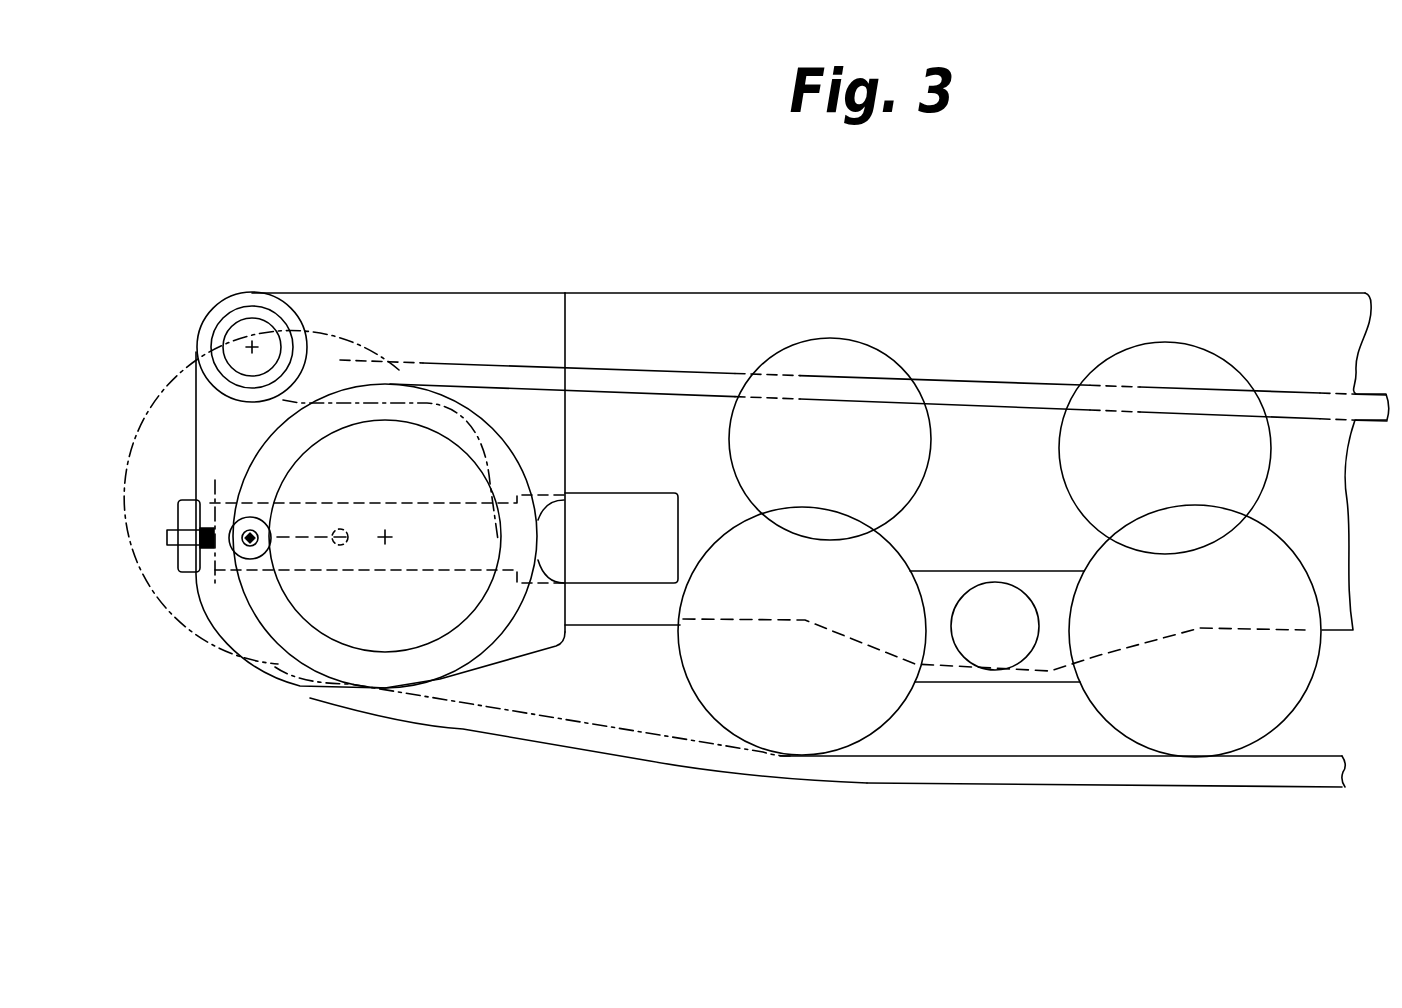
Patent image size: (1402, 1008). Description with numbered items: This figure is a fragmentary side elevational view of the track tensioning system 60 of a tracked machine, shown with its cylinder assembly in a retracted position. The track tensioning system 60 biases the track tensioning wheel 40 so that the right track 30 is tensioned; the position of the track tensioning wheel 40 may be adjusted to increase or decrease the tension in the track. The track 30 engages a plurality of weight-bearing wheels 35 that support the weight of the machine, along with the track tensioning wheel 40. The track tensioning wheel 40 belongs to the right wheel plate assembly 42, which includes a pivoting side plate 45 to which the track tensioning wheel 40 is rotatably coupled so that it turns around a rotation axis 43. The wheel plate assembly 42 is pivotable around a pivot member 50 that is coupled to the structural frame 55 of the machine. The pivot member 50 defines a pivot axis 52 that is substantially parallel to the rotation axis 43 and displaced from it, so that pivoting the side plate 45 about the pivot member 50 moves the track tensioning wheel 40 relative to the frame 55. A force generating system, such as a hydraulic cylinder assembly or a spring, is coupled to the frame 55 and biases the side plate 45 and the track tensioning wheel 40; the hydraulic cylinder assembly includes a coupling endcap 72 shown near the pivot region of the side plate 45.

The right track 30 is at (645, 363).
The weight-bearing wheels 35 is at (885, 722).
The track tensioning wheel 40 is at (483, 657).
The right wheel plate assembly 42 is at (458, 281).
The rotation axis 43 is at (385, 537).
The pivoting side plate 45 is at (567, 328).
The pivot member 50 is at (248, 310).
The pivot axis 52 is at (252, 348).
The structural frame 55 is at (1165, 292).
The track tensioning system 60 is at (402, 235).
The coupling endcap 72 is at (177, 572).